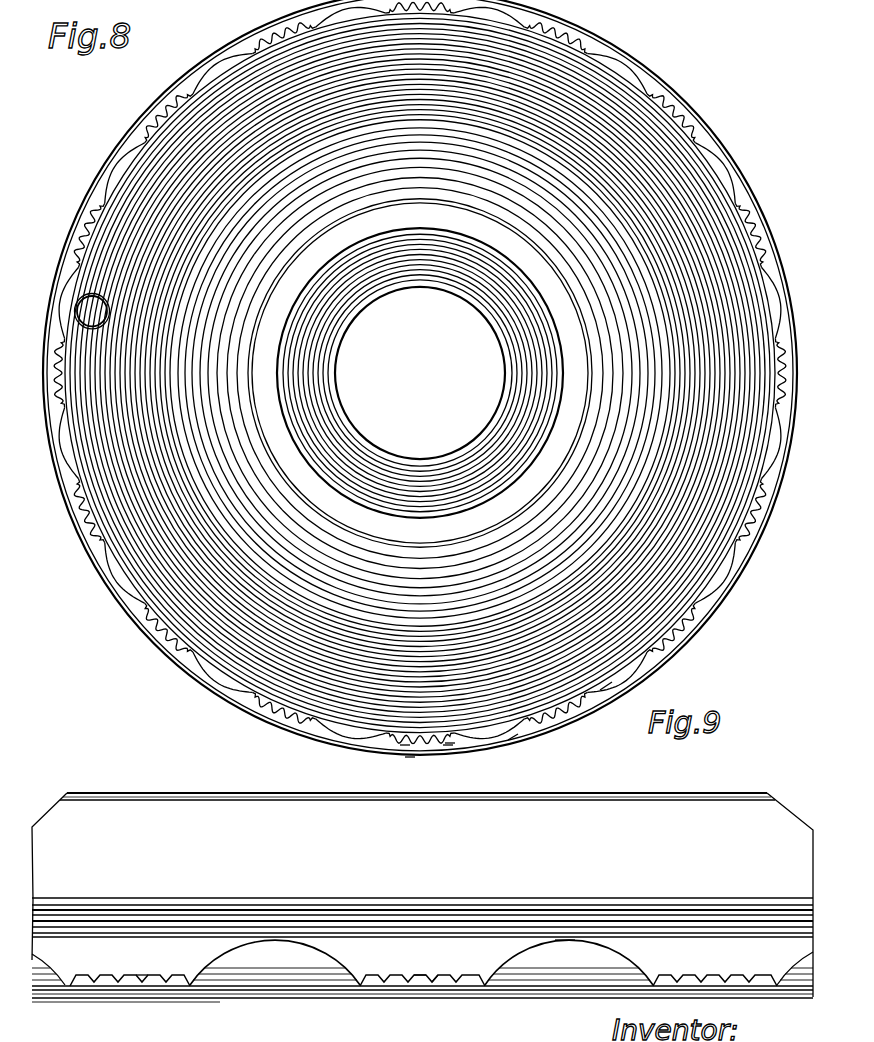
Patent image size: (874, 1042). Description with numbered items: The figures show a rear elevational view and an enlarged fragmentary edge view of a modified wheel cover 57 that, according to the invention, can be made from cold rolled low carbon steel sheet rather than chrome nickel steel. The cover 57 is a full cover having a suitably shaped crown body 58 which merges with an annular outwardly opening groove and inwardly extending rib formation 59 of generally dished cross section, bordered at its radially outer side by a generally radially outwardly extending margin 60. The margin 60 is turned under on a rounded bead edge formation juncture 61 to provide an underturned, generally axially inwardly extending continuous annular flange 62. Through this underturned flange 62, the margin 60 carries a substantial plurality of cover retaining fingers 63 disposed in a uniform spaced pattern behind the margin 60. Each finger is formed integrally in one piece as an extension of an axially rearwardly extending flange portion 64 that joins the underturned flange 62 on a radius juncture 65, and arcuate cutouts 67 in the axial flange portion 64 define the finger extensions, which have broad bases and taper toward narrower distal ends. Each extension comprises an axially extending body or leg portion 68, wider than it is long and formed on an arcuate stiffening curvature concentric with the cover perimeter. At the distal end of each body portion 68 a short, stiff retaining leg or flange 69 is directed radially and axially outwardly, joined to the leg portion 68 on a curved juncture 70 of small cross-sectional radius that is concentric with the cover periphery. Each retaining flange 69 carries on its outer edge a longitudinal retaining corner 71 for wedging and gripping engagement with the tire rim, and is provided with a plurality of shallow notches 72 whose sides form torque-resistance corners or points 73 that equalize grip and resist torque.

In FIG. 8, the wheel cover 57 is at (732, 607).
In FIG. 9, the wheel cover 57 is at (787, 788).
In FIG. 8, the crown body 58 is at (437, 362).
In FIG. 9, the crown body 58 is at (635, 800).
In FIG. 8, the annular outwardly opening groove and inwardly extending rib formation 59 is at (207, 680).
In FIG. 9, the annular outwardly opening groove and inwardly extending rib formation 59 is at (307, 992).
In FIG. 9, the margin 60 is at (507, 877).
In FIG. 9, the rounded bead edge formation juncture 61 is at (618, 877).
In FIG. 8, the underturned continuous annular flange 62 is at (513, 737).
In FIG. 9, the underturned continuous annular flange 62 is at (577, 963).
In FIG. 8, the cover retaining fingers 63 is at (277, 732).
In FIG. 9, the cover retaining fingers 63 is at (138, 1002).
In FIG. 8, the axially extending flange portion 64 is at (608, 687).
In FIG. 9, the axially extending flange portion 64 is at (647, 977).
In FIG. 9, the radius juncture 65 is at (500, 933).
In FIG. 8, the arcuate cutouts 67 is at (630, 667).
In FIG. 9, the arcuate cutouts 67 is at (507, 960).
In FIG. 8, the body or leg portion 68 is at (405, 745).
In FIG. 9, the body or leg portion 68 is at (415, 975).
In FIG. 8, the retaining leg or flange 69 is at (450, 743).
In FIG. 9, the retaining leg or flange 69 is at (440, 980).
In FIG. 8, the curved juncture 70 is at (448, 745).
In FIG. 9, the curved juncture 70 is at (480, 987).
In FIG. 9, the longitudinal retaining corner 71 is at (405, 977).
In FIG. 8, the shallow notches 72 is at (410, 757).
In FIG. 9, the shallow notches 72 is at (160, 973).
In FIG. 9, the torque-resistance corners or points 73 is at (155, 977).